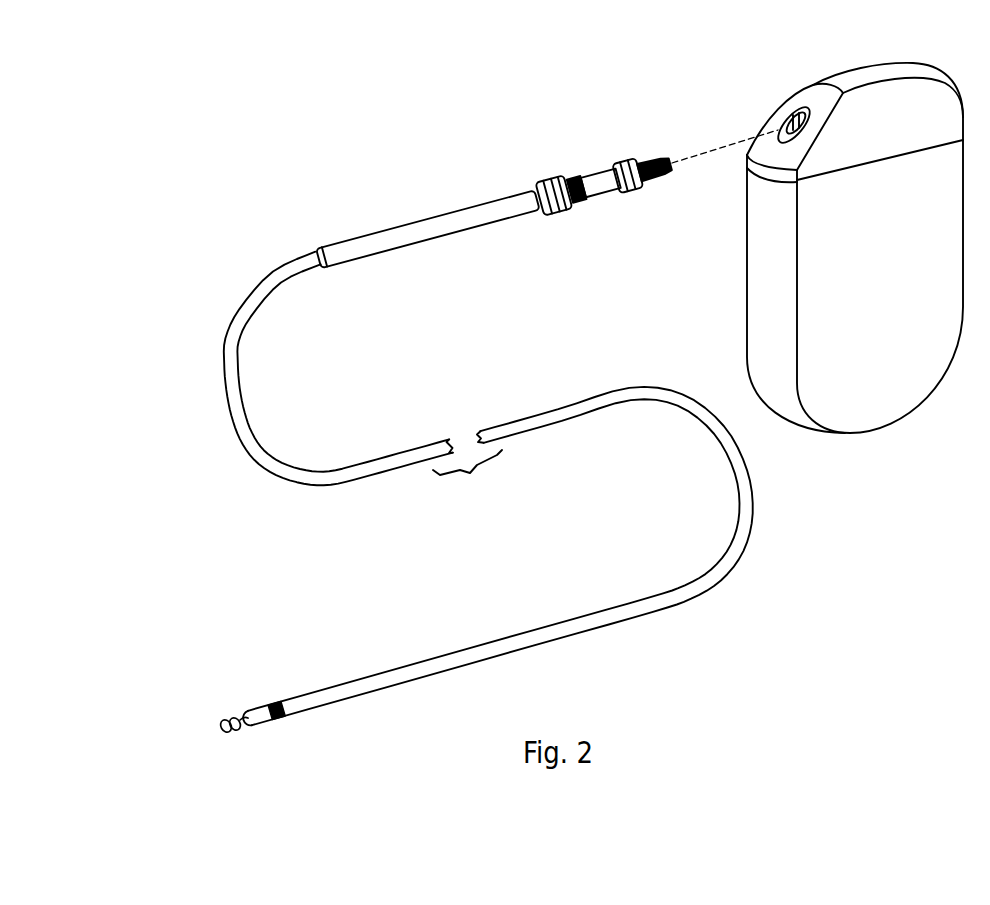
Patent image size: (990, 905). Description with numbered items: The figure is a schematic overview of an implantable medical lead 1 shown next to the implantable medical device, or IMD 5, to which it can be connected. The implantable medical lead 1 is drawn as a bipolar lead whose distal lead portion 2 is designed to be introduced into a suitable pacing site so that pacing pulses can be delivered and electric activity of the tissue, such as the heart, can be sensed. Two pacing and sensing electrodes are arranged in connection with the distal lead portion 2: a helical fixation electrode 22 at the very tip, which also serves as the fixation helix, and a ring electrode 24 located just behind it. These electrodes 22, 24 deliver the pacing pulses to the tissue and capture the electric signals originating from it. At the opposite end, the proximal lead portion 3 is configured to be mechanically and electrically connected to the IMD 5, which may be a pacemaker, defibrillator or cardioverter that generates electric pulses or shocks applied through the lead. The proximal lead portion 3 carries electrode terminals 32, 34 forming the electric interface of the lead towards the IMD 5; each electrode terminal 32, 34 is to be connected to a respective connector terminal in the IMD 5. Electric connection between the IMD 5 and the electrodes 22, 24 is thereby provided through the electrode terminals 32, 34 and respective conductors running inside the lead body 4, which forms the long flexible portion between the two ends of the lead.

The implantable medical lead 1 is at (233, 247).
The distal lead portion 2 is at (261, 721).
The proximal lead portion 3 is at (546, 175).
The lead body 4 is at (236, 430).
The implantable medical device (IMD) 5 is at (874, 262).
The helical fixation electrode 22 is at (238, 740).
The ring electrode 24 is at (286, 724).
The electrode terminal 32 is at (655, 169).
The electrode terminal 34 is at (589, 185).